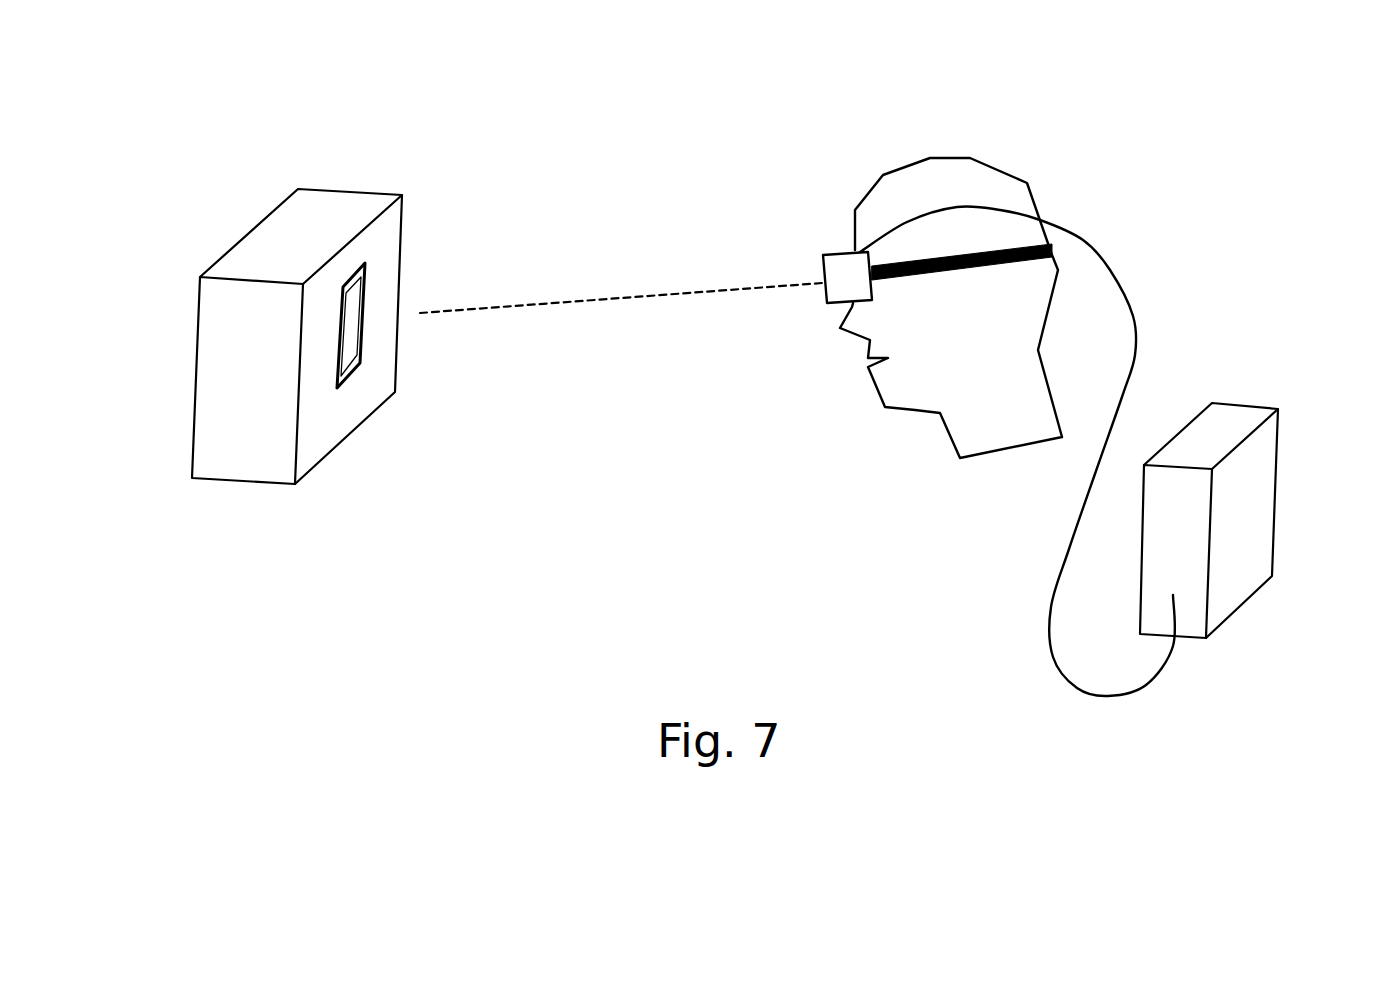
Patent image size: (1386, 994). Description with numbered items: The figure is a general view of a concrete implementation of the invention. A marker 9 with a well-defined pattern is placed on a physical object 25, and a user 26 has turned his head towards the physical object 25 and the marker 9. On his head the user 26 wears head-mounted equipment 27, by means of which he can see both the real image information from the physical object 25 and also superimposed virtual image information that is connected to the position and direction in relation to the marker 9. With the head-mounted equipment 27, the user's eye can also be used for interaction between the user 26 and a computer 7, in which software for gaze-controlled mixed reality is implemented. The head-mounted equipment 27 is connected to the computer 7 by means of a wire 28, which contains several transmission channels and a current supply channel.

The computer 7 is at (1243, 508).
The marker 9 is at (362, 357).
The physical object 25 is at (327, 455).
The user 26 is at (952, 358).
The head-mounted equipment 27 is at (825, 250).
The wire 28 is at (1087, 238).